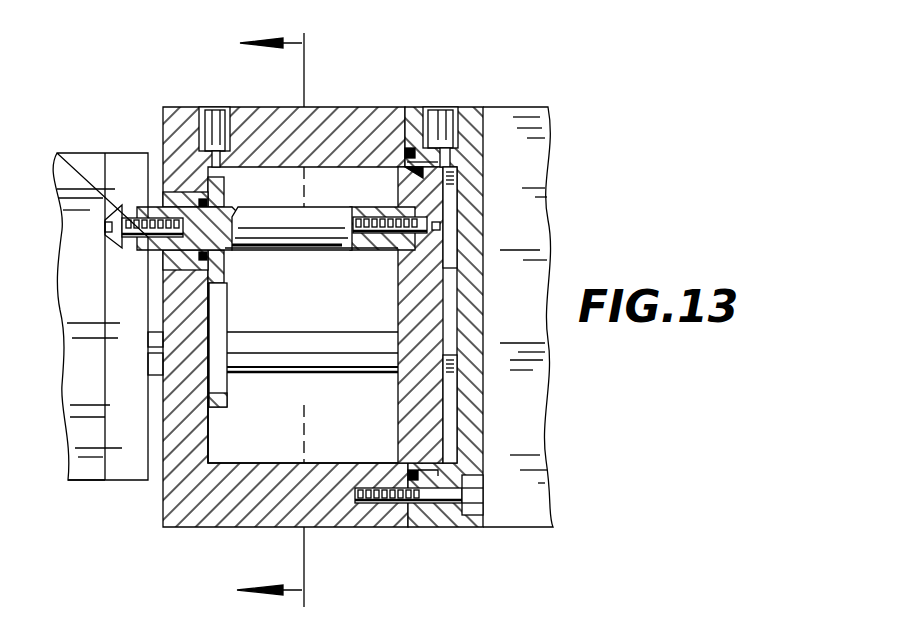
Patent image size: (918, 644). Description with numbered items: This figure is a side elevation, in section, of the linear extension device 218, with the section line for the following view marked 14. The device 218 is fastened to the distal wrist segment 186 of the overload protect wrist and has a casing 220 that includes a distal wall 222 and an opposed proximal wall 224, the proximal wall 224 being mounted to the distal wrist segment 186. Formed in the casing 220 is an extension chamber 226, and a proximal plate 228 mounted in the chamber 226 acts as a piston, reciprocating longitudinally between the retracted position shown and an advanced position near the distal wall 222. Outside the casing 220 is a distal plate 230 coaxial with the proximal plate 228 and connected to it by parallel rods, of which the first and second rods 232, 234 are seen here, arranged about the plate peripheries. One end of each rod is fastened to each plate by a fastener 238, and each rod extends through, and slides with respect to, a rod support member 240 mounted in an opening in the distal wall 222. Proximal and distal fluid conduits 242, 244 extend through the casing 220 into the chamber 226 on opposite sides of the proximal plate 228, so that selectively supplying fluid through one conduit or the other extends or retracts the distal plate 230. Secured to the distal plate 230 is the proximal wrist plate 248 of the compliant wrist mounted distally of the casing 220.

The section line 14- 14 is at (303, 318).
The distal wrist segment 186 is at (520, 162).
The linear extension device 218 is at (390, 93).
The casing 220 is at (230, 515).
The distal wall 222 is at (193, 437).
The proximal wall 224 is at (478, 434).
The extension chamber 226 is at (382, 308).
The proximal plate 228 is at (413, 425).
The distal plate 230 is at (97, 351).
The first rod 232 is at (316, 218).
The second rod 234 is at (270, 333).
The fastener 238 is at (433, 222).
The rod support member 240 is at (222, 192).
The proximal fluid conduit 242 is at (440, 112).
The distal fluid conduit 244 is at (213, 107).
The proximal wrist plate 248 is at (90, 480).